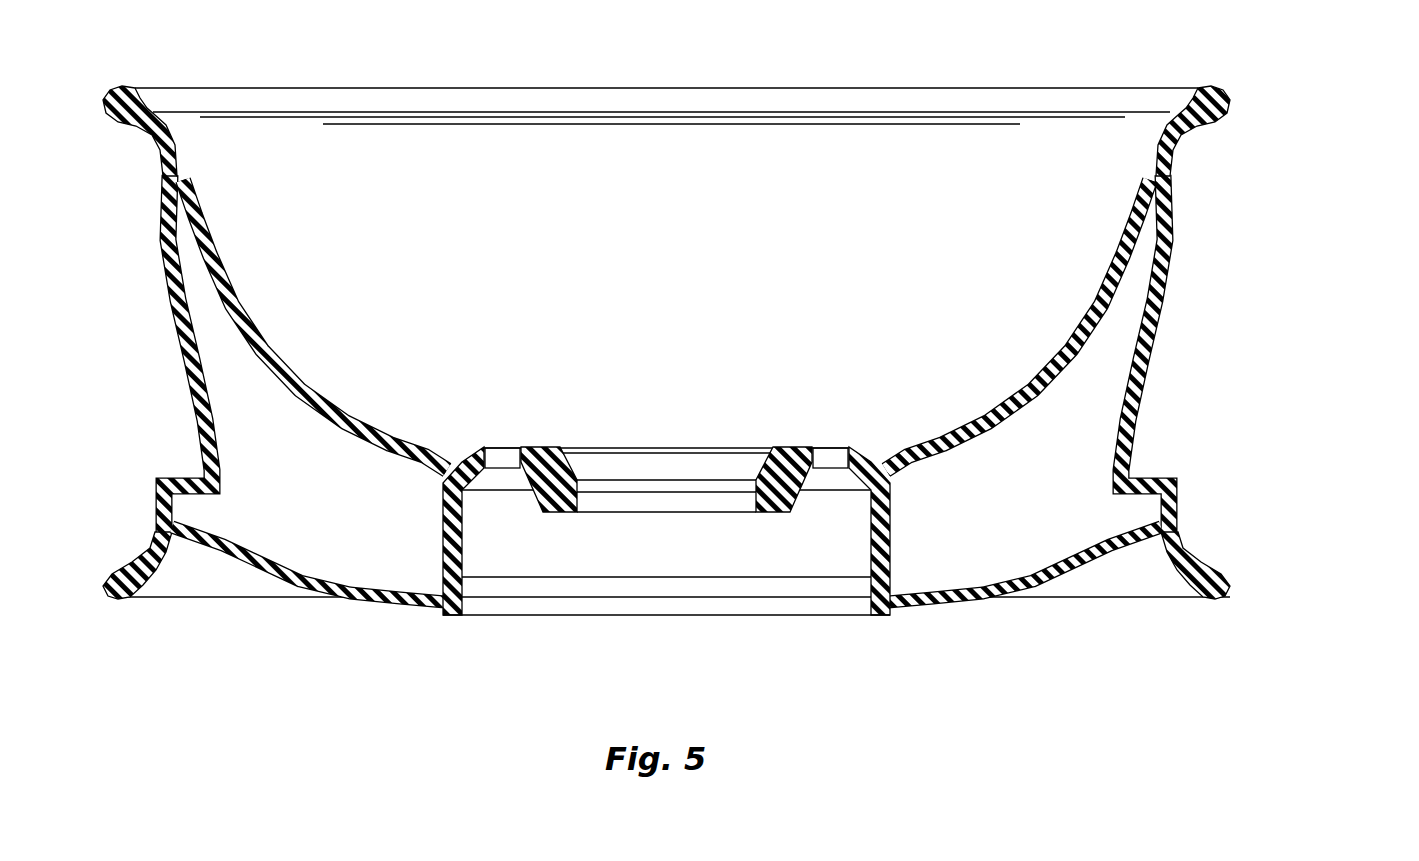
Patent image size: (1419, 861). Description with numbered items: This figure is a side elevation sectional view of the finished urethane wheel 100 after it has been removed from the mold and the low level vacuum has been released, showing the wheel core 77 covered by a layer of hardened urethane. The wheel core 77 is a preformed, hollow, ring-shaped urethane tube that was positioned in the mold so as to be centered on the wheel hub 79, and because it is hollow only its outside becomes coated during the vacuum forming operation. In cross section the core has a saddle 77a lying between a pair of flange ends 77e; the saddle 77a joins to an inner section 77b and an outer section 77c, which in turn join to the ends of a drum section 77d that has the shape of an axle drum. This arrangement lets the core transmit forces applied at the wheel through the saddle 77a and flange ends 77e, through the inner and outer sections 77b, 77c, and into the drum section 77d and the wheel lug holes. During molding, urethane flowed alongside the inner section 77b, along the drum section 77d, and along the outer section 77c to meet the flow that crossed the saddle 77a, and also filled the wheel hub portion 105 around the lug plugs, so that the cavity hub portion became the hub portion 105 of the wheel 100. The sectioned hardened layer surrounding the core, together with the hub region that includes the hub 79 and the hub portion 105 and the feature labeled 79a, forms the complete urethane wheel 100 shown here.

The urethane wheel 100 is at (761, 397).
The wheel core 77 is at (1157, 333).
The saddle 77a is at (1146, 377).
The inner section 77b is at (1020, 592).
The outer section 77c is at (1076, 354).
The drum section 77d is at (890, 543).
The flange ends 77e is at (1230, 88).
The wheel hub 79 is at (772, 472).
The plate protrusion 79a is at (832, 458).
The wheel hub portion 105 is at (805, 460).